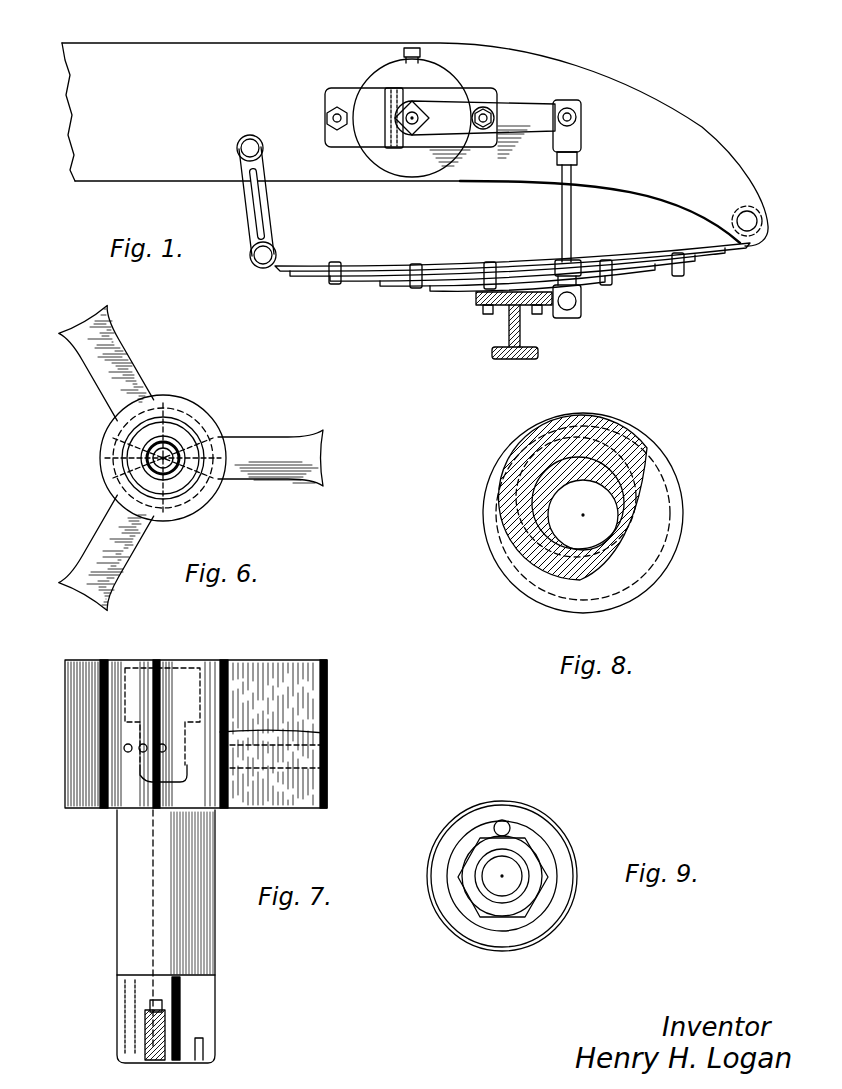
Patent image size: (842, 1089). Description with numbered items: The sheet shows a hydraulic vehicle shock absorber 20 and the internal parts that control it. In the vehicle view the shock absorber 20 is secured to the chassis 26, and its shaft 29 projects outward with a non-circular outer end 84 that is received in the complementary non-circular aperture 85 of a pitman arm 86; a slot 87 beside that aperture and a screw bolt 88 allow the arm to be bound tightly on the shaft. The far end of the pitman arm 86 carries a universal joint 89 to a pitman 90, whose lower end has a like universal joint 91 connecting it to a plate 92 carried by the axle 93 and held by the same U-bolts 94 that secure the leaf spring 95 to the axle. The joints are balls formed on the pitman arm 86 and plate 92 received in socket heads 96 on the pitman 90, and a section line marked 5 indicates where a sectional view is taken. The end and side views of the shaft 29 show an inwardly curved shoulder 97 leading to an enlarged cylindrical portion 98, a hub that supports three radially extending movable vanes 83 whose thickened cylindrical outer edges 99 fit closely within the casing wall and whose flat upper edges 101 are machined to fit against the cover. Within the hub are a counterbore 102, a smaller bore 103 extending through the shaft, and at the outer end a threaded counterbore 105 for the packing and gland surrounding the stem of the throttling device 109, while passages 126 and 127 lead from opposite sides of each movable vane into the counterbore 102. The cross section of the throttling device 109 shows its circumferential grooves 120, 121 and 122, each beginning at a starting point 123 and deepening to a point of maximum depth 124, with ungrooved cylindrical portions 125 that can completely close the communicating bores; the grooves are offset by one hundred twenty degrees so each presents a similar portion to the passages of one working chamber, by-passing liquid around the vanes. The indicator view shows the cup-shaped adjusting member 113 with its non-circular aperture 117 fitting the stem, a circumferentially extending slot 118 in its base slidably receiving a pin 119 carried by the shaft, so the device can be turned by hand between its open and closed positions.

In FIG. 1, the section line 5 is at (402, 10).
In FIG. 1, the shock absorber 20 is at (447, 80).
In FIG. 1, the chassis 26 is at (533, 58).
In FIG. 6, the shaft 29 is at (233, 512).
In FIG. 7, the shaft 29 is at (122, 921).
In FIG. 6, the movable vanes 83 is at (186, 457).
In FIG. 7, the movable vanes 83 is at (92, 659).
In FIG. 7, the non-circular outer end 84 is at (127, 1029).
In FIG. 1, the non-circular aperture 85 is at (418, 100).
In FIG. 1, the pitman arm 86 is at (527, 120).
In FIG. 1, the slot 87 is at (385, 117).
In FIG. 1, the screw bolt 88 is at (393, 88).
In FIG. 1, the universal joint 89 is at (577, 103).
In FIG. 1, the pitman 90 is at (573, 217).
In FIG. 1, the universal joint 91 is at (582, 311).
In FIG. 1, the plate 92 is at (506, 308).
In FIG. 1, the axle 93 is at (521, 330).
In FIG. 1, the U-bolts 94 is at (491, 263).
In FIG. 1, the leaf spring 95 is at (628, 264).
In FIG. 1, the socket heads 96 is at (577, 140).
In FIG. 7, the inwardly curved shoulder 97 is at (222, 812).
In FIG. 6, the enlarged cylindrical portion 98 is at (139, 458).
In FIG. 6, the outer edges 99 is at (208, 456).
In FIG. 7, the outer edges 99 is at (328, 707).
In FIG. 6, the upper edges 101 is at (163, 503).
In FIG. 7, the upper edges 101 is at (258, 660).
In FIG. 7, the counterbore 102 is at (327, 767).
In FIG. 7, the smaller bore 103 is at (152, 872).
In FIG. 7, the counterbore 105 is at (186, 1012).
In FIG. 8, the throttling device 109 is at (497, 521).
In FIG. 9, the adjusting member 113 is at (549, 828).
In FIG. 9, the non-circular aperture 117 is at (526, 871).
In FIG. 9, the circumferentially extending slot 118 is at (473, 836).
In FIG. 9, the pin 119 is at (508, 820).
In FIG. 8, the groove 120 is at (640, 549).
In FIG. 8, the groove 121 is at (621, 587).
In FIG. 8, the groove 122 is at (500, 553).
In FIG. 8, the starting point 123 is at (553, 426).
In FIG. 8, the point of maximum depth 124 is at (636, 494).
In FIG. 8, the cylindrical portions 125 is at (609, 428).
In FIG. 7, the passages 126 is at (118, 748).
In FIG. 7, the passages 127 is at (118, 768).